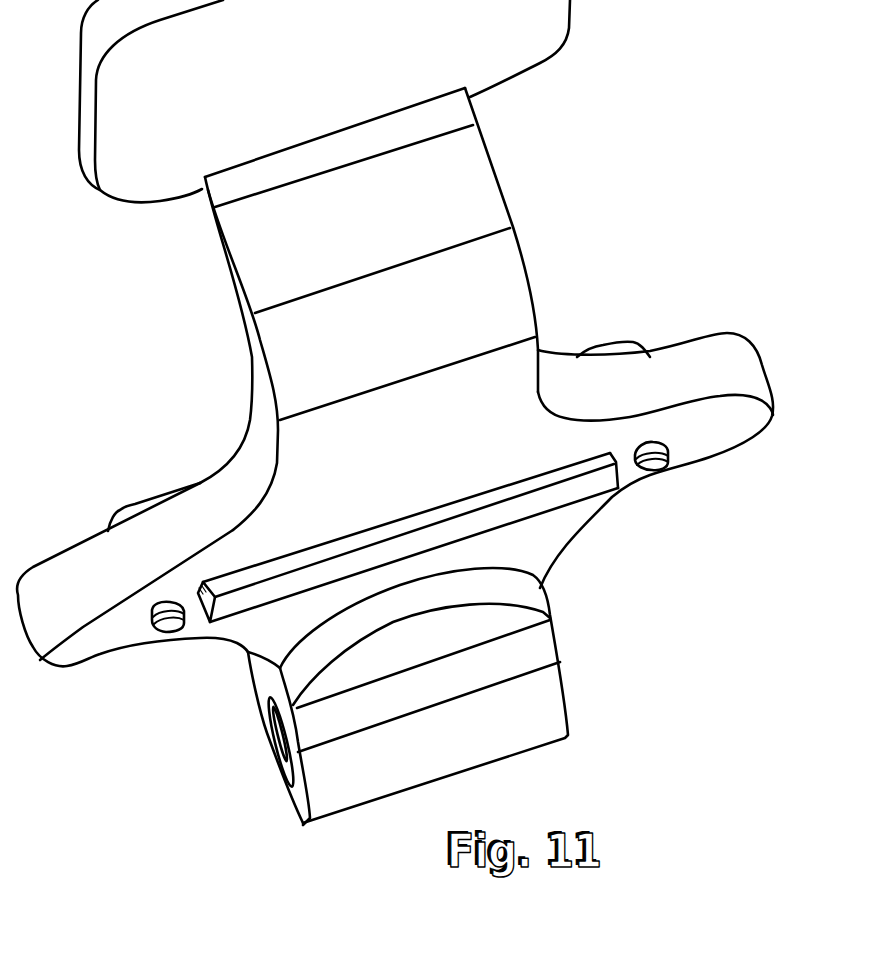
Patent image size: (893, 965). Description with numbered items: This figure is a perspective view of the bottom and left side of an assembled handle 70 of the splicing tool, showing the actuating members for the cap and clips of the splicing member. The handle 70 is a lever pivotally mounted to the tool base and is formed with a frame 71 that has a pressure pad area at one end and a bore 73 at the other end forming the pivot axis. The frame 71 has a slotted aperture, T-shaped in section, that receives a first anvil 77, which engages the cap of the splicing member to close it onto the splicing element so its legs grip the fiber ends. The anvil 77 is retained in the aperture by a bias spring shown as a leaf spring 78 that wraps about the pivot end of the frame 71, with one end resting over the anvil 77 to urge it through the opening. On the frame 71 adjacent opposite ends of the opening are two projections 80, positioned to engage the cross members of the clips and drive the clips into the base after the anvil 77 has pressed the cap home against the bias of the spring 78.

The handle 70 is at (409, 412).
The frame 71 is at (745, 373).
The bore 73 is at (277, 727).
The anvil 77 is at (550, 499).
The leaf spring 78 is at (598, 347).
The projections 80 is at (659, 467).